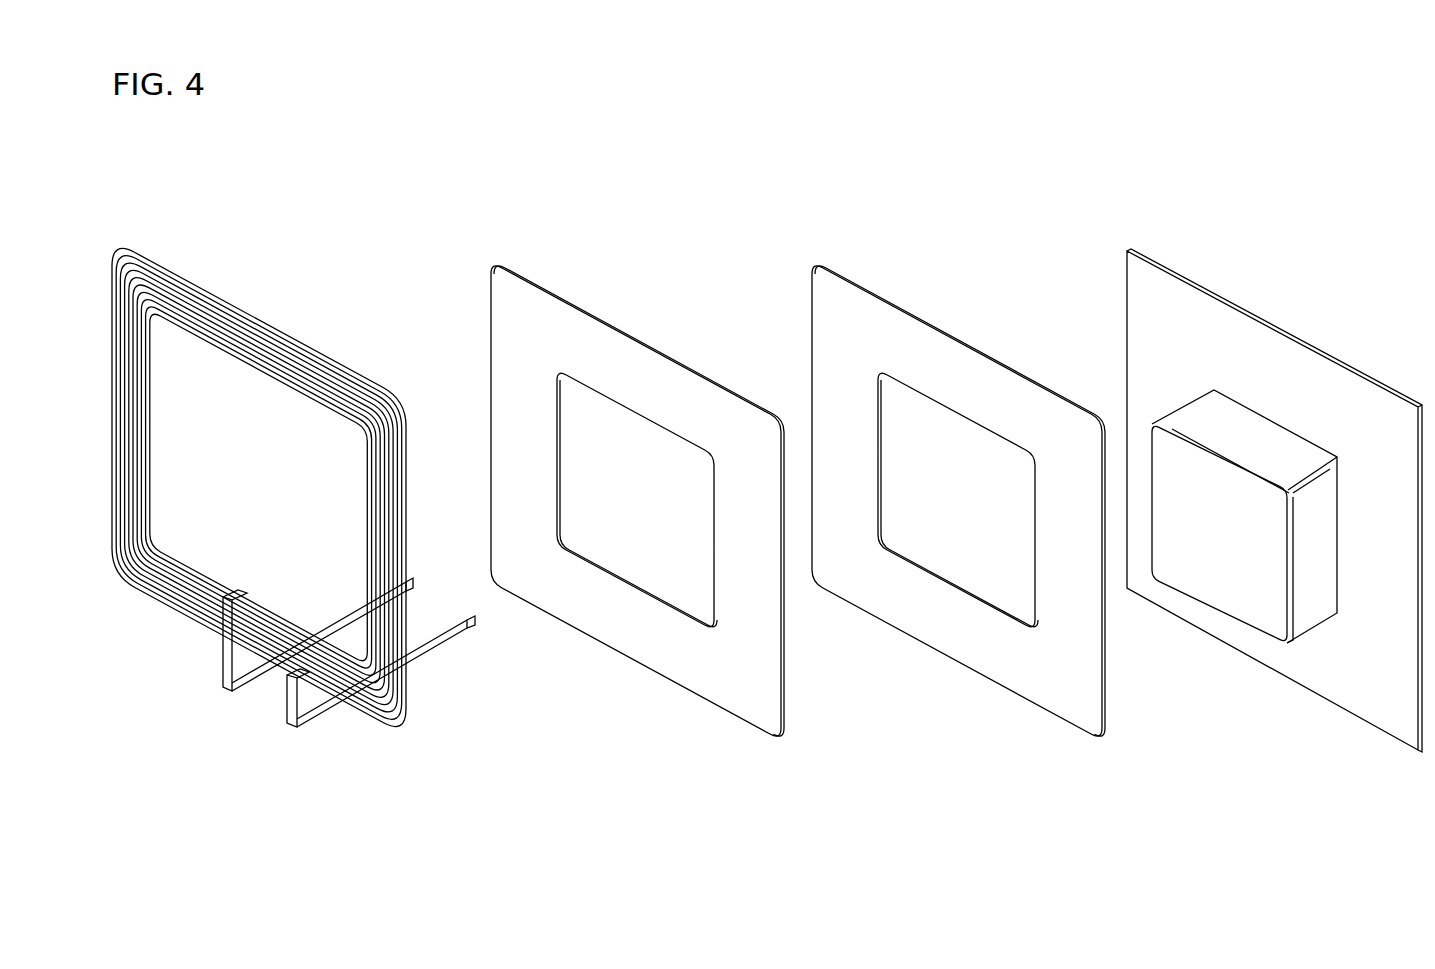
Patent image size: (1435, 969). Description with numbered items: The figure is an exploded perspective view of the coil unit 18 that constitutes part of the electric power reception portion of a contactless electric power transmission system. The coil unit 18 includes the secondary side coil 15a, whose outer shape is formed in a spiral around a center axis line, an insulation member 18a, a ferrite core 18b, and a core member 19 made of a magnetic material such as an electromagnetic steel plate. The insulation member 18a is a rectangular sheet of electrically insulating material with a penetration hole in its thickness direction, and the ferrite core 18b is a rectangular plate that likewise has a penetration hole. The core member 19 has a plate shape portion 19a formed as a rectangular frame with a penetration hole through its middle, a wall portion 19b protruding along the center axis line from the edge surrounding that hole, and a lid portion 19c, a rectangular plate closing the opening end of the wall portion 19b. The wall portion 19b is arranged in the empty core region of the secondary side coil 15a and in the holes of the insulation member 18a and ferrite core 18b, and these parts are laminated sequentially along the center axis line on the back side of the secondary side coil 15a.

The secondary side coil 15a is at (226, 300).
The coil unit 18 is at (956, 440).
The insulation member 18a is at (587, 300).
The ferrite core 18b is at (913, 302).
The core member 19 is at (1274, 482).
The plate shape portion 19a is at (1214, 332).
The wall portion 19b is at (1243, 434).
The lid portion 19c is at (1257, 538).